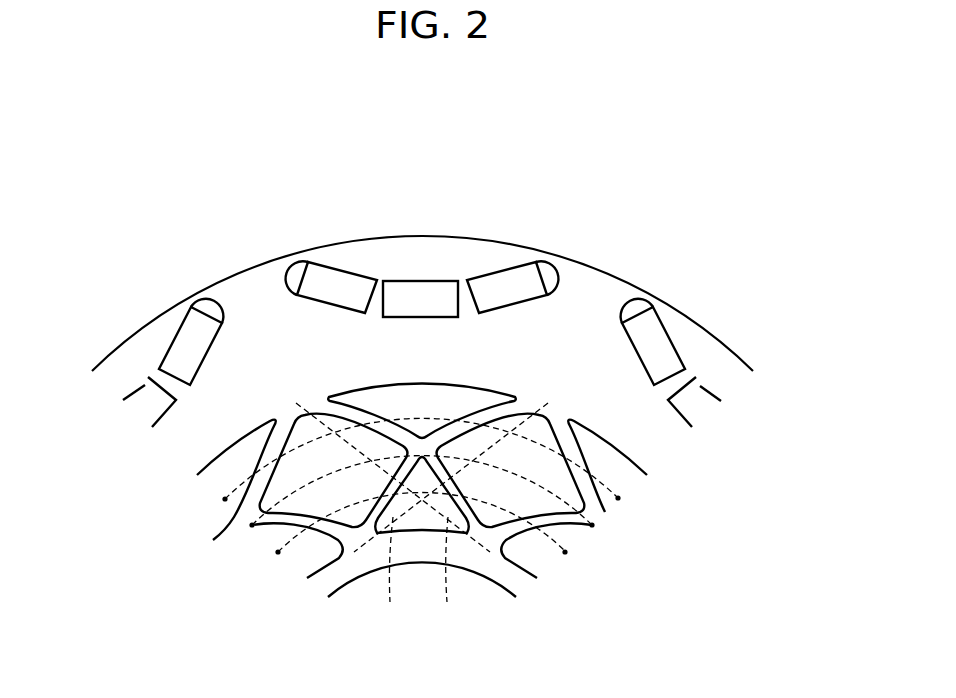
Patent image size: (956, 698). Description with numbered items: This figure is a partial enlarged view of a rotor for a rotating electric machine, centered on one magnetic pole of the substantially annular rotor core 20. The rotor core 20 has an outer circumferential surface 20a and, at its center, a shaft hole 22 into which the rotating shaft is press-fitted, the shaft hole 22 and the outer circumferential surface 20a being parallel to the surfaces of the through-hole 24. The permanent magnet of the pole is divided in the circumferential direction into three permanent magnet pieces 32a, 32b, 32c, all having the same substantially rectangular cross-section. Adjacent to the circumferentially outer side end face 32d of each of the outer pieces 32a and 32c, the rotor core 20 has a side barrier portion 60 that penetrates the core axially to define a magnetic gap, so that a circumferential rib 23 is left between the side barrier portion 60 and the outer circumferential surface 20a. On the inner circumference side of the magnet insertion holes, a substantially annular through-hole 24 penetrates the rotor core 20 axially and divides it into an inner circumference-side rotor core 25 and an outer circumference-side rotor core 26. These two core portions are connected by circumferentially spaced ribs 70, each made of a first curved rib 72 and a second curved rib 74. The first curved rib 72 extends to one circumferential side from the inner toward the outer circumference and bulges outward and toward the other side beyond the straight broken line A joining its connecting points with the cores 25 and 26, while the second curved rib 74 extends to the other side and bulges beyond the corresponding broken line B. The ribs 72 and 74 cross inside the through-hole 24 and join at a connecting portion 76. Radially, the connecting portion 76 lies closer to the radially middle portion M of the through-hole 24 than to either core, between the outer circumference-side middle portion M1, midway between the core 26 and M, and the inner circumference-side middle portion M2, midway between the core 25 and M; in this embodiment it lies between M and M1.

The rotor core 20 is at (767, 186).
The outer circumferential surface 20a is at (740, 354).
The shaft hole 22 is at (483, 583).
The circumferential rib 23 is at (200, 298).
The through-hole 24 is at (279, 486).
The inner circumference-side rotor core 25 is at (507, 575).
The outer circumference-side rotor core 26 is at (653, 433).
The permanent magnet piece 32a is at (657, 347).
The permanent magnet piece 32b is at (145, 385).
The permanent magnet piece 32c is at (187, 338).
The circumferentially outer side end face 32d is at (230, 317).
The side barrier portion 60 is at (222, 305).
The rib 70 is at (491, 175).
The first curved rib 72 is at (369, 415).
The second curved rib 74 is at (485, 415).
The connecting portion 76 is at (422, 450).
The broken line A is at (444, 567).
The broken line B is at (387, 567).
The radially middle portion M is at (432, 500).
The outer circumference-side middle portion M1 is at (440, 468).
The inner circumference-side middle portion M2 is at (442, 532).